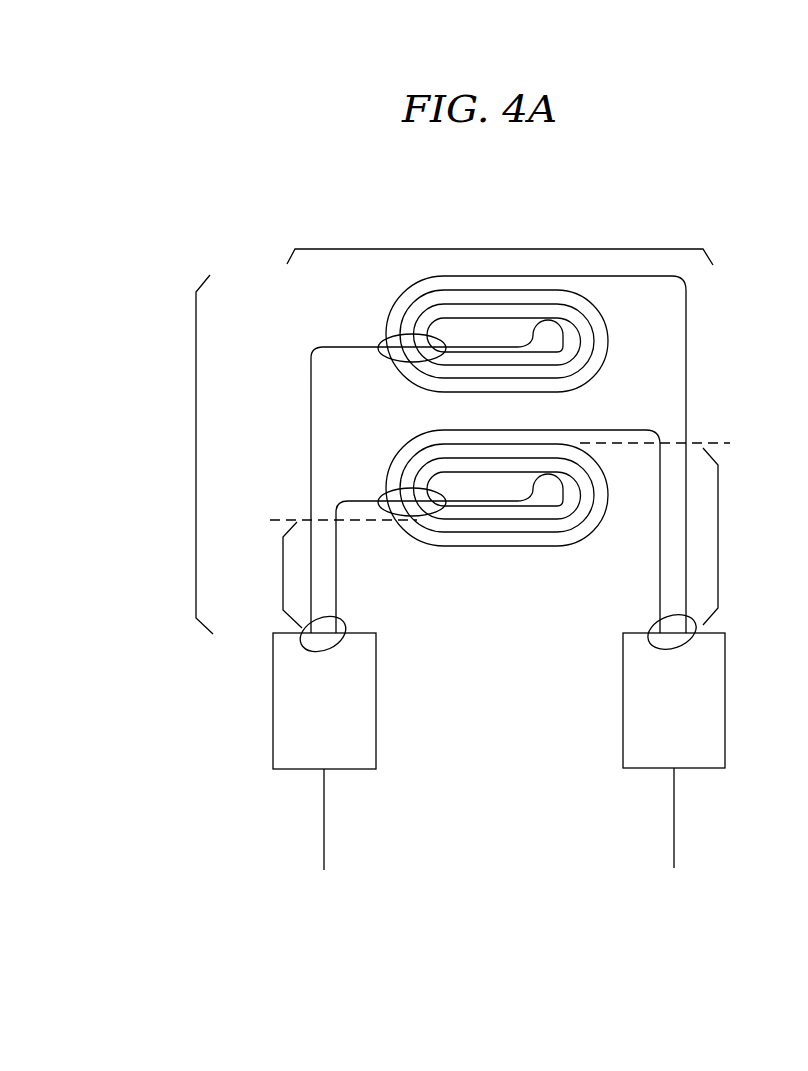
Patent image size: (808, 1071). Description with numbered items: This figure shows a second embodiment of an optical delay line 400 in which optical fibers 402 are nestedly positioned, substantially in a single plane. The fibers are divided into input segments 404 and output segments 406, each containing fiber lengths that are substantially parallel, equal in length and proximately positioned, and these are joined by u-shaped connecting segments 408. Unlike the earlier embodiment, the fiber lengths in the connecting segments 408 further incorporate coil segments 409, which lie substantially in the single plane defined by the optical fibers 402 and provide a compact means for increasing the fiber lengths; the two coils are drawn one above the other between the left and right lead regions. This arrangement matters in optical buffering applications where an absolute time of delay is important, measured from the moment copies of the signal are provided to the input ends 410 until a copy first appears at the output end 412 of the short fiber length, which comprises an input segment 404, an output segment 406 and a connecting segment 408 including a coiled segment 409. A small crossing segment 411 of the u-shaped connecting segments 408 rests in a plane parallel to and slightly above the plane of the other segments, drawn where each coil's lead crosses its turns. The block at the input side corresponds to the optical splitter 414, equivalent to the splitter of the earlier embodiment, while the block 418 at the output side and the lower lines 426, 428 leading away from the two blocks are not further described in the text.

The delay line 400 is at (472, 173).
The optical fibers 402 is at (196, 488).
The input segments 404 is at (280, 573).
The output segments 406 is at (719, 540).
The connecting segments 408 is at (485, 249).
The coil segments 409 is at (598, 463).
The input ends 410 is at (347, 622).
The crossing segment 411 is at (380, 343).
The output end 412 is at (652, 623).
The optical splitter 414 is at (273, 700).
The second terminal block 418 is at (727, 700).
The first output lead 426 is at (322, 772).
The second output lead 428 is at (670, 772).